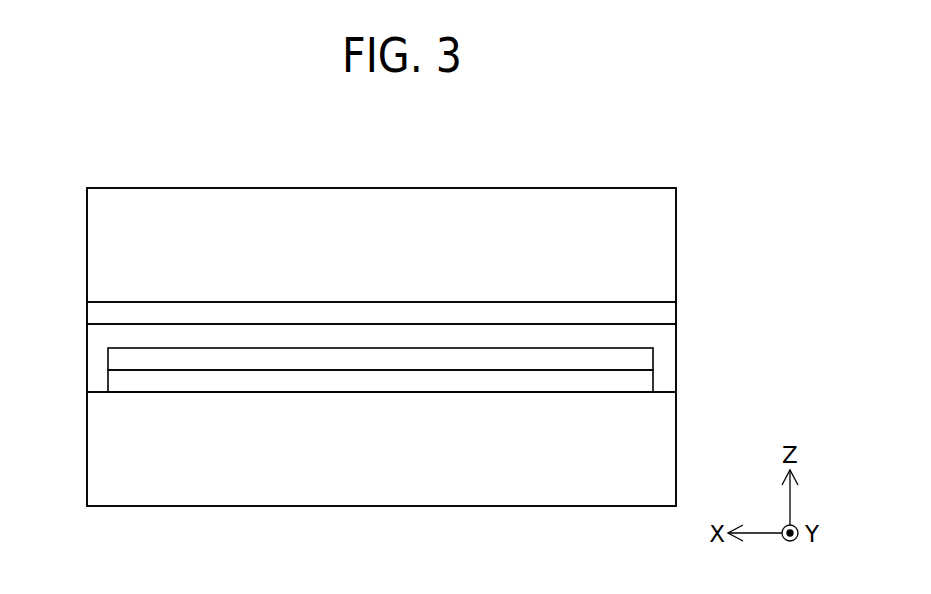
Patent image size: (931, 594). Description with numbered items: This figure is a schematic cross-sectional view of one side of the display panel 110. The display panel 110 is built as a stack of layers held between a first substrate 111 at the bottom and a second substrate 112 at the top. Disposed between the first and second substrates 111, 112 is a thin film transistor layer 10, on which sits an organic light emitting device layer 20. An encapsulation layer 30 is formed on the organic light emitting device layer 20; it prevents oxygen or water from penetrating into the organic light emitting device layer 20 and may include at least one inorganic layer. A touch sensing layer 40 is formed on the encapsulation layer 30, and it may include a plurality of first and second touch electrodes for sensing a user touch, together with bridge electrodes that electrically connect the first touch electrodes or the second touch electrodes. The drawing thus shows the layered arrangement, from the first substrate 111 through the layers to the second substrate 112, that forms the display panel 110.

The display panel 110 is at (92, 145).
The first substrate 111 is at (662, 448).
The second substrate 112 is at (662, 235).
The thin film transistor layer 10 is at (643, 381).
The organic light emitting device layer 20 is at (643, 359).
The encapsulation layer 30 is at (662, 341).
The touch sensing layer 40 is at (662, 316).